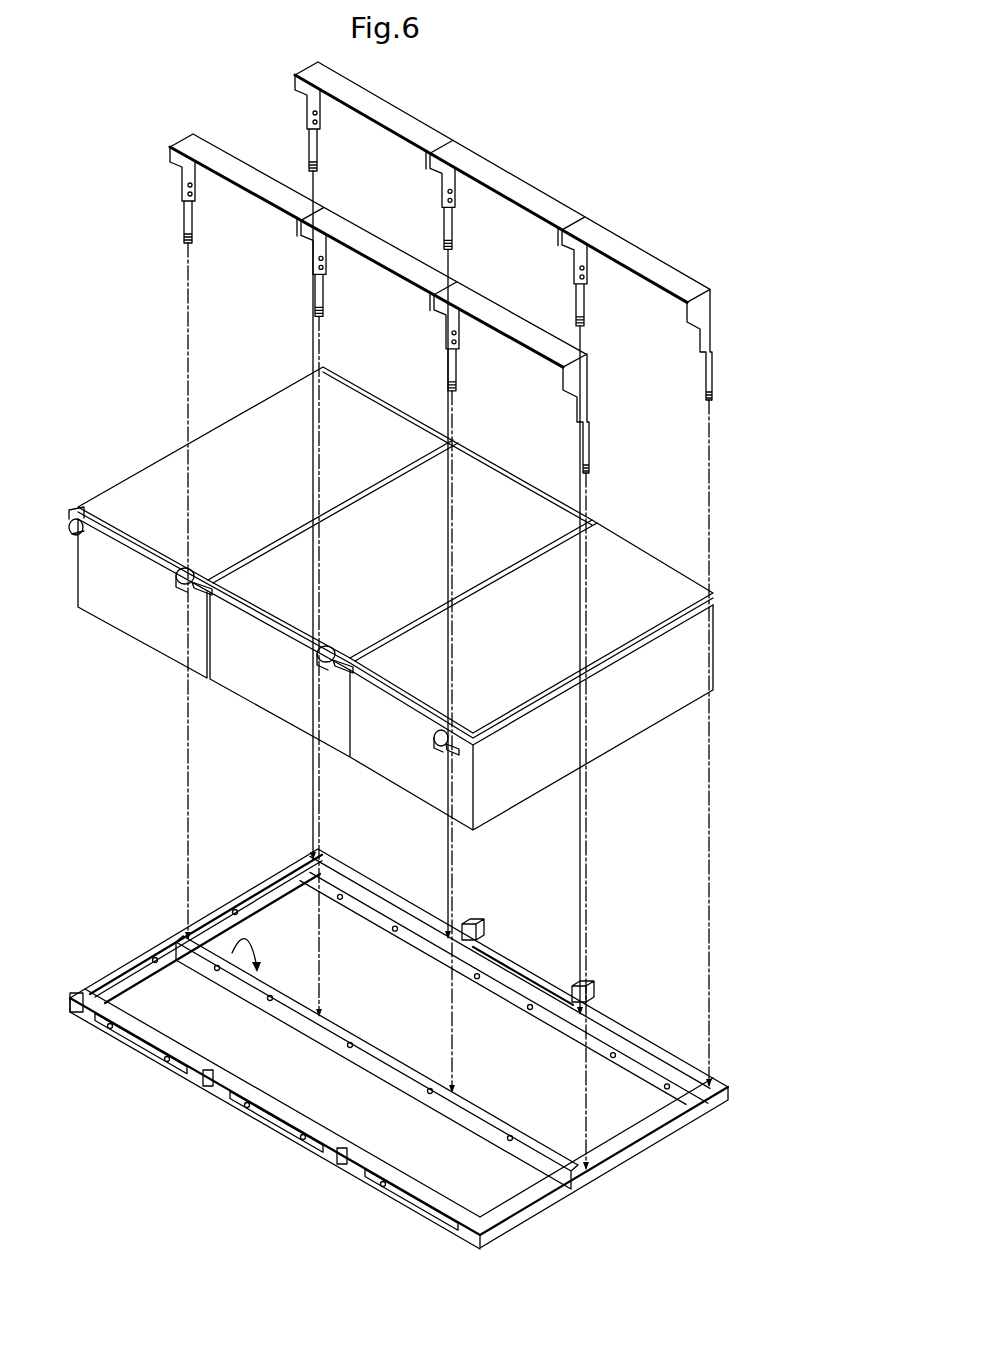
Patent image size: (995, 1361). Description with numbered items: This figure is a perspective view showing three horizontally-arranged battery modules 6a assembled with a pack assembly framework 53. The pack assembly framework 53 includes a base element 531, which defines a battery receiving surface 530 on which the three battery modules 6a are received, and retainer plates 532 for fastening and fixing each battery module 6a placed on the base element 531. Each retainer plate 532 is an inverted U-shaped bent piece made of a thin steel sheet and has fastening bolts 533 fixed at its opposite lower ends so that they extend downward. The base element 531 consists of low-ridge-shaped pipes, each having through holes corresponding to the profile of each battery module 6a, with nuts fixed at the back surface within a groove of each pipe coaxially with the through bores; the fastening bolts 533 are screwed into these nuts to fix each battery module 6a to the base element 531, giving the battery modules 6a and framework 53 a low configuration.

The pack assembly framework 53 is at (404, 1049).
The battery receiving surface 530 is at (232, 953).
The base element 531 is at (668, 1130).
The retainer plate 532 is at (498, 318).
The fastening bolt 533 is at (589, 450).
The battery module 6a is at (613, 745).